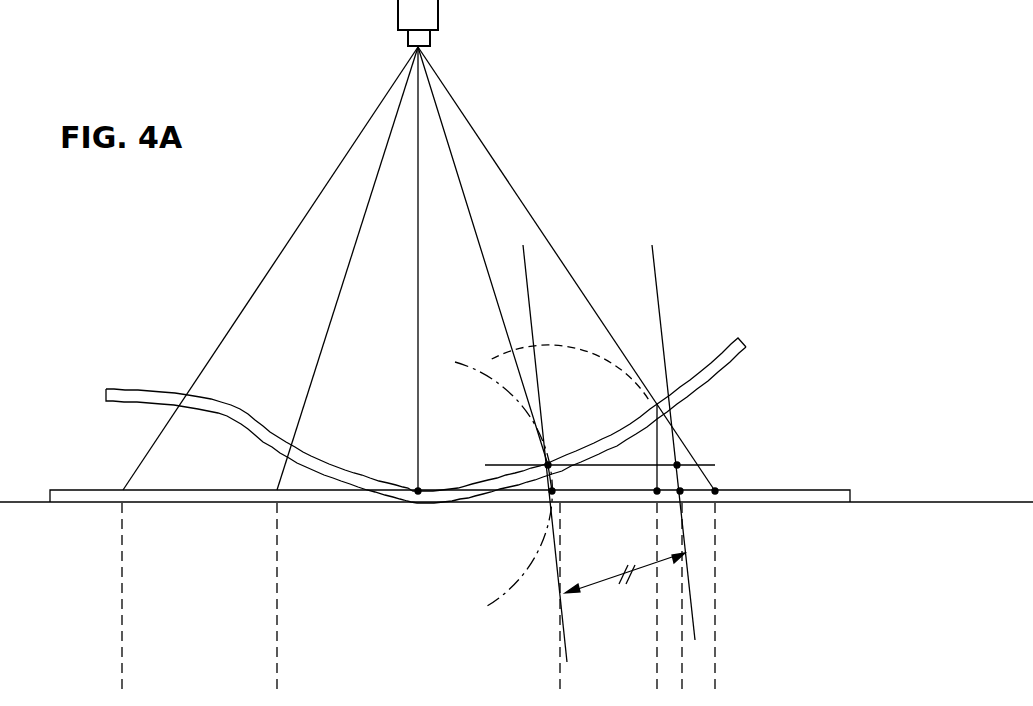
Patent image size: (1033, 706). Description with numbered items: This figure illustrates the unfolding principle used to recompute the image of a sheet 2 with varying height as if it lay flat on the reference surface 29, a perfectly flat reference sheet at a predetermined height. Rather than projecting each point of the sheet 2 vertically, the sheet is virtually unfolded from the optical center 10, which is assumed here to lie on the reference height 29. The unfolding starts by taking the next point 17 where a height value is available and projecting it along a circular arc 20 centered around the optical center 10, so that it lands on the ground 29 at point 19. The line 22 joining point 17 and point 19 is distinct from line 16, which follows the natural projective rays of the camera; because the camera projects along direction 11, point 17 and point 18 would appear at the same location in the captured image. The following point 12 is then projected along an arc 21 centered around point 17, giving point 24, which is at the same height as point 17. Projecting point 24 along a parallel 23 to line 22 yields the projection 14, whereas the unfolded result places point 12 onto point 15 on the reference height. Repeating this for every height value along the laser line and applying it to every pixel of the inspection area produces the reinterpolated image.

The sheet 2 is at (733, 338).
The optical center 10 is at (418, 491).
The projection direction 11 is at (526, 205).
The point on the sheet 12 is at (659, 400).
The projected point 14 is at (657, 491).
The unfolded projection point 15 is at (715, 490).
The projective ray 16 is at (468, 208).
The next height point 17 is at (548, 465).
The point on projective ray 18 is at (584, 465).
The projected point of point 17 19 is at (549, 493).
The circular arc 20 is at (497, 385).
The arc centered around point 17 21 is at (565, 348).
The line joining points 17 and 19 22 is at (527, 267).
The parallel line 23 is at (657, 267).
The intermediate projection point 24 is at (679, 465).
The reference surface 29 is at (799, 488).